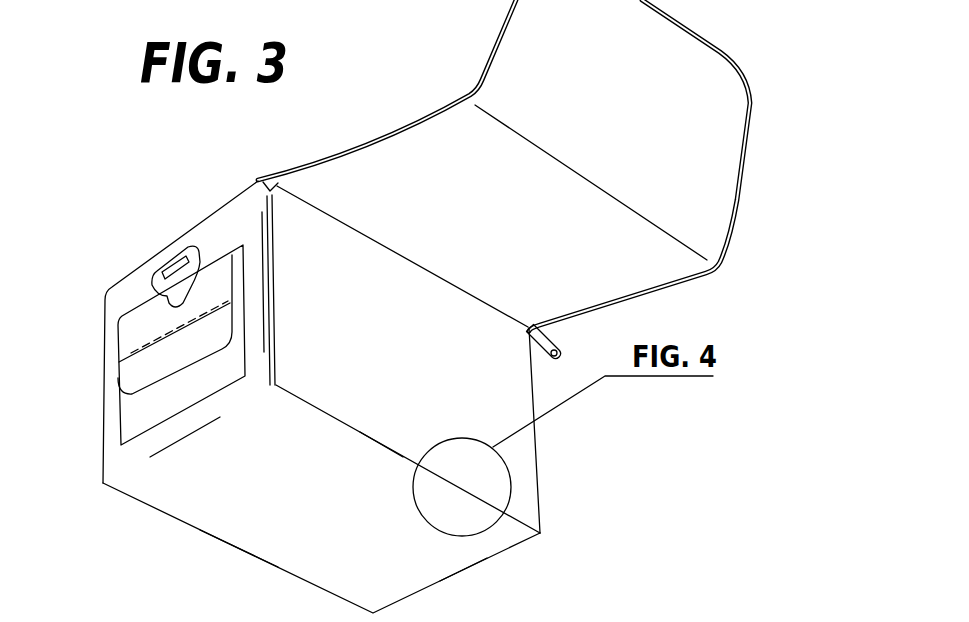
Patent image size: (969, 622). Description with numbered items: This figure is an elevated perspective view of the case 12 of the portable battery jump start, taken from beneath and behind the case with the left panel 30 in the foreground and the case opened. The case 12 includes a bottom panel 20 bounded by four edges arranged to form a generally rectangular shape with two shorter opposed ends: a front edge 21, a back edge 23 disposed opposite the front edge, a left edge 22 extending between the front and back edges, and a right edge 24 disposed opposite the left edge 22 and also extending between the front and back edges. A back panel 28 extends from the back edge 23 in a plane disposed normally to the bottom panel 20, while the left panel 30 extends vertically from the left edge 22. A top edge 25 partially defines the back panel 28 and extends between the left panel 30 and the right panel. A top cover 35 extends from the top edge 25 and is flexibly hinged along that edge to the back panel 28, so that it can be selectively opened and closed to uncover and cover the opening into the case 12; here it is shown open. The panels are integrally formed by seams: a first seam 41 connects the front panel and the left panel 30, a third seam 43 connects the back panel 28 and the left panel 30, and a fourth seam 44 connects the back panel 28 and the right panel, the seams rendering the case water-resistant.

The case 12 is at (160, 543).
The bottom panel 20 is at (318, 526).
The front edge 21 is at (278, 567).
The left edge 22 is at (487, 558).
The back edge 23 is at (403, 458).
The right edge 24 is at (178, 441).
The top edge 25 is at (488, 303).
The back panel 28 is at (405, 346).
The left panel 30 is at (215, 233).
The top cover 35 is at (507, 231).
The first seam 41 is at (103, 418).
The third seam 43 is at (270, 288).
The fourth seam 44 is at (540, 468).